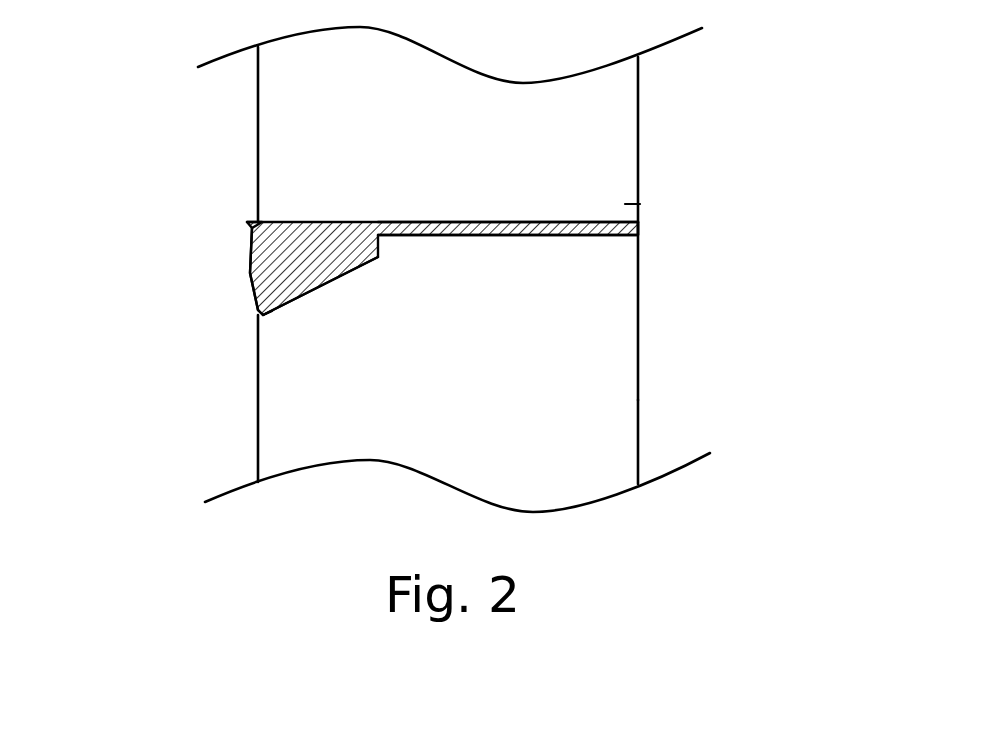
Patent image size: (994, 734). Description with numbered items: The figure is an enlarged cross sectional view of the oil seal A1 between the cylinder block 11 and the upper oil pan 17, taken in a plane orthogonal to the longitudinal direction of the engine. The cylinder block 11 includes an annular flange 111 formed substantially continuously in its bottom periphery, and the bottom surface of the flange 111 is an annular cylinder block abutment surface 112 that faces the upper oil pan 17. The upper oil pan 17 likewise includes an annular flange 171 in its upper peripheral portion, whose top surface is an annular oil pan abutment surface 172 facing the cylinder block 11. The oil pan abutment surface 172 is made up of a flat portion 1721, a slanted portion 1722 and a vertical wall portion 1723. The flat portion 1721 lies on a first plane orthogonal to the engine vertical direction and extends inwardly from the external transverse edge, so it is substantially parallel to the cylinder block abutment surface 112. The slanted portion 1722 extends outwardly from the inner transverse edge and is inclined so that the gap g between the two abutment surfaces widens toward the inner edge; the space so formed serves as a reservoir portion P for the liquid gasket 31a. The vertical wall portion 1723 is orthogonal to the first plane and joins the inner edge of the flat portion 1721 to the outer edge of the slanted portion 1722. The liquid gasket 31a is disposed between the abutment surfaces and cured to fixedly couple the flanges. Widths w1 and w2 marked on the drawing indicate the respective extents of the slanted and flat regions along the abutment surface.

The cylinder block 11 is at (639, 147).
The annular flange 111 is at (638, 203).
The cylinder block abutment surface 112 is at (252, 228).
The upper oil pan 17 is at (638, 405).
The annular flange 171 is at (638, 297).
The oil pan abutment surface 172 is at (567, 236).
The flat portion 1721 is at (640, 231).
The slanted portion 1722 is at (262, 315).
The vertical wall portion 1723 is at (341, 284).
The liquid gasket 31a is at (252, 287).
The reservoir portion P is at (228, 255).
The oil seal A1 is at (715, 155).
The gap g is at (257, 320).
The width w1 is at (378, 257).
The width w2 is at (638, 398).